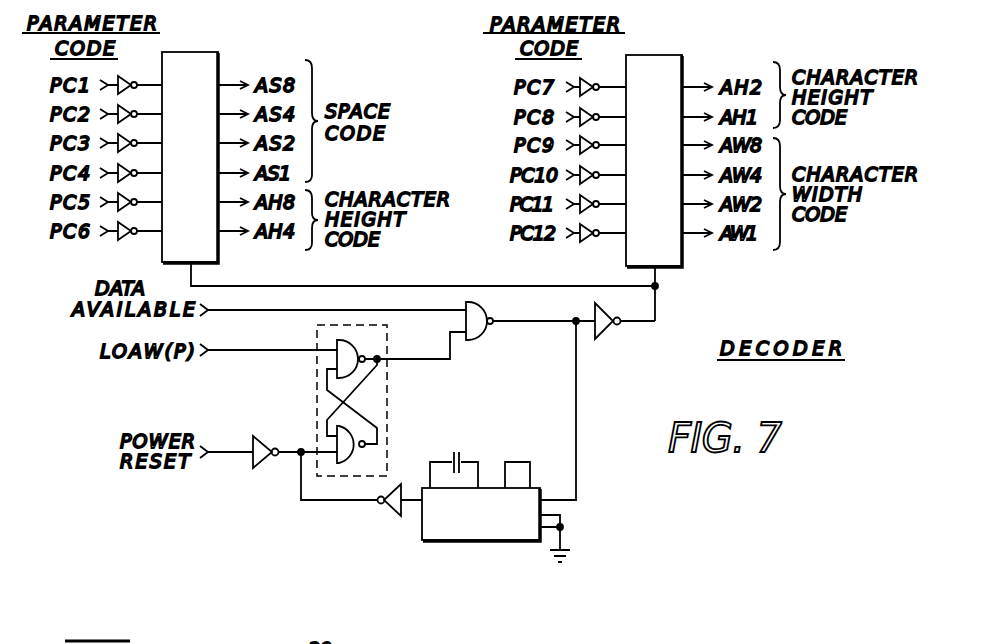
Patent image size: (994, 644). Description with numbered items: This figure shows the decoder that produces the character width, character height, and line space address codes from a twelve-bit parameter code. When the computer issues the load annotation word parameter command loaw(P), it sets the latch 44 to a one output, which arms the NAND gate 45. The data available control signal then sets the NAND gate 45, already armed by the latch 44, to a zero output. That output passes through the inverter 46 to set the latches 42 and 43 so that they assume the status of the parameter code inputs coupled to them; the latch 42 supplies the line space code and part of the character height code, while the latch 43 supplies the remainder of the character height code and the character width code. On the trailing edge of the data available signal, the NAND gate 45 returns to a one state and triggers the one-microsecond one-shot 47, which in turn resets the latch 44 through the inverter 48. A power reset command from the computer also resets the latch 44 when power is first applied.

The latch 42 is at (200, 52).
The latch 43 is at (665, 55).
The latch 44 is at (388, 405).
The NAND gate 45 is at (483, 331).
The inverter 46 is at (607, 329).
The one-shot 47 is at (462, 541).
The inverter 48 is at (389, 511).